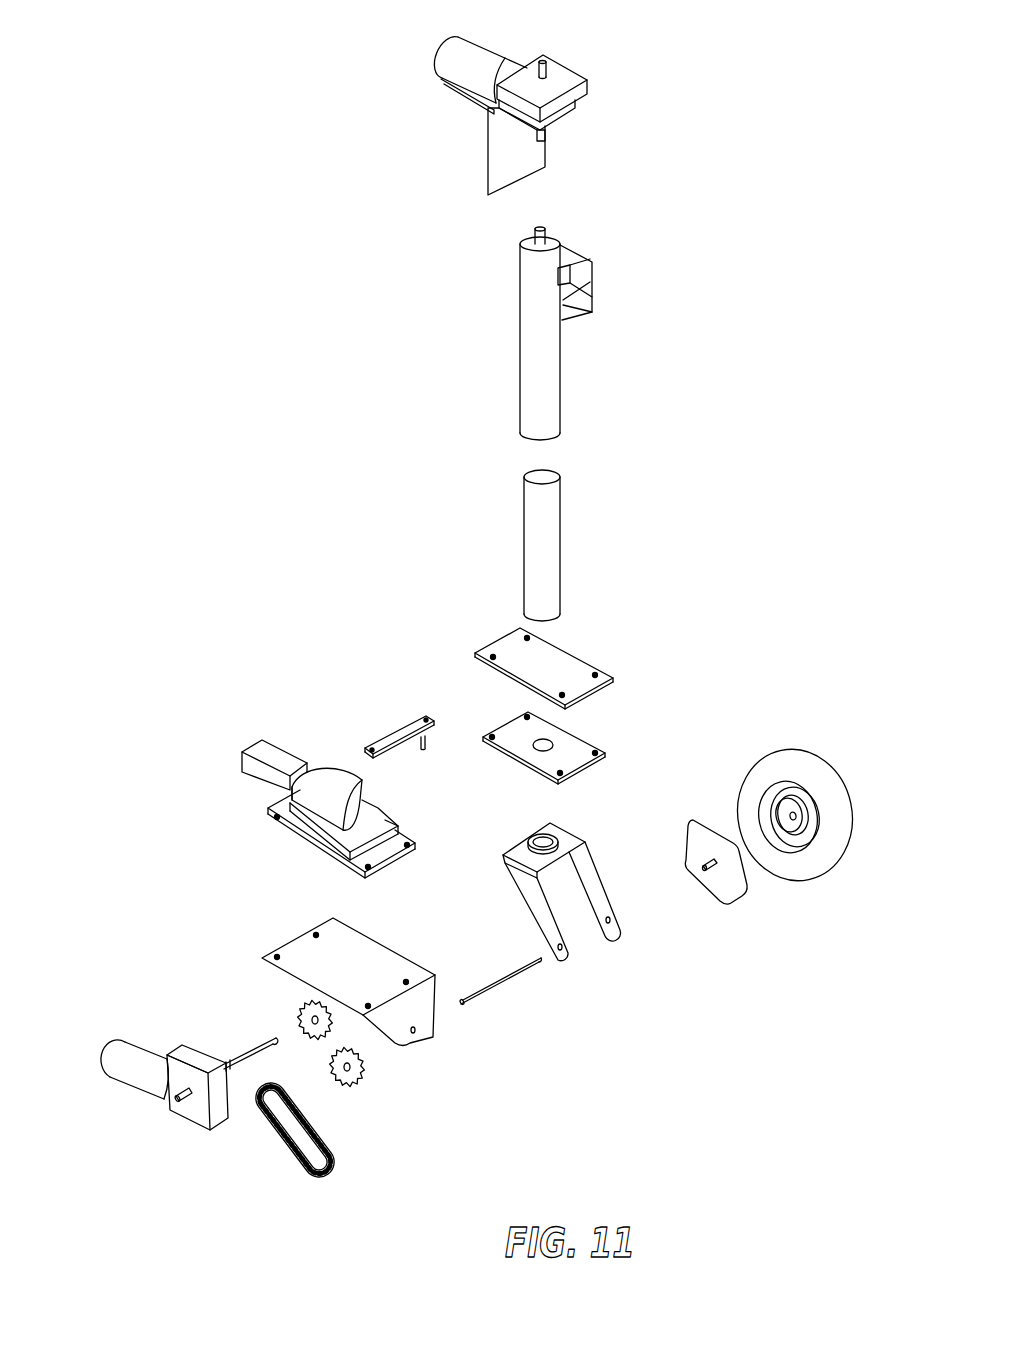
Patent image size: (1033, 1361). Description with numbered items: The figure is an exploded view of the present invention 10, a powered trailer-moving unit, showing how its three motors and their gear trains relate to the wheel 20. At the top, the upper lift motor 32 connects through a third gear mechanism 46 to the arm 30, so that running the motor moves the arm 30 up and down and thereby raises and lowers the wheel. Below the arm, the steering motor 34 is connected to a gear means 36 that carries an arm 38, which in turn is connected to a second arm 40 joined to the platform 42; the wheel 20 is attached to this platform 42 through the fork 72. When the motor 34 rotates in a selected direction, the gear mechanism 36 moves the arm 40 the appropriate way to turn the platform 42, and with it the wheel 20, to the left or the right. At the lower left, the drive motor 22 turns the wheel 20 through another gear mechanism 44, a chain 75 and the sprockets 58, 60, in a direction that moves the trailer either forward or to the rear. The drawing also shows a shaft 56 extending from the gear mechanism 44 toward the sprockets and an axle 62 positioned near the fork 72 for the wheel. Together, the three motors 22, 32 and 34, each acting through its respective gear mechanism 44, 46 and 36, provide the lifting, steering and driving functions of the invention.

The present invention 10 is at (724, 399).
The wheel 20 is at (772, 757).
The drive motor 22 is at (122, 1055).
The arm 30 is at (548, 410).
The upper lift motor 32 is at (453, 55).
The steering motor 34 is at (243, 764).
The gear means 36 is at (333, 770).
The arm 38 is at (367, 815).
The second arm 40 is at (401, 730).
The platform 42 is at (560, 663).
The gear mechanism 44 is at (192, 1112).
The third gear mechanism 46 is at (588, 87).
The drive shaft 56 is at (248, 1057).
The sprocket 58 is at (298, 1013).
The sprocket 60 is at (355, 1092).
The axle 62 is at (502, 982).
The fork 72 is at (598, 866).
The chain 75 is at (330, 1160).